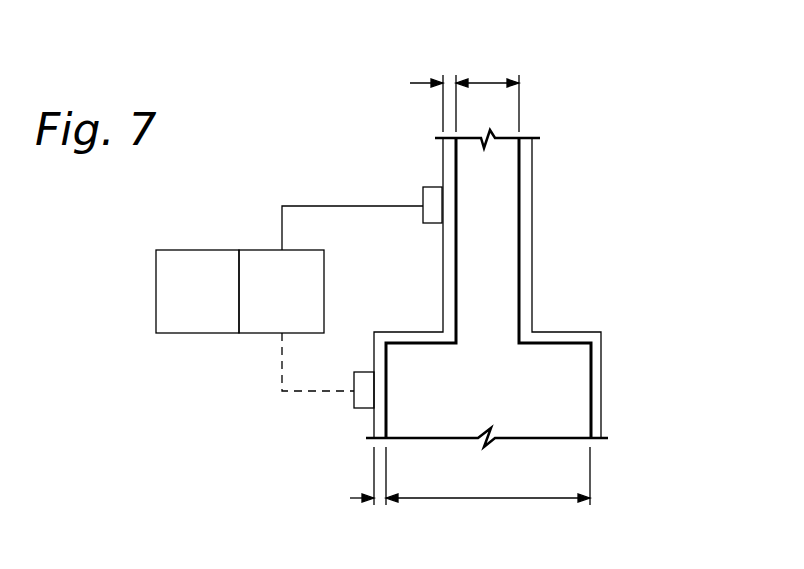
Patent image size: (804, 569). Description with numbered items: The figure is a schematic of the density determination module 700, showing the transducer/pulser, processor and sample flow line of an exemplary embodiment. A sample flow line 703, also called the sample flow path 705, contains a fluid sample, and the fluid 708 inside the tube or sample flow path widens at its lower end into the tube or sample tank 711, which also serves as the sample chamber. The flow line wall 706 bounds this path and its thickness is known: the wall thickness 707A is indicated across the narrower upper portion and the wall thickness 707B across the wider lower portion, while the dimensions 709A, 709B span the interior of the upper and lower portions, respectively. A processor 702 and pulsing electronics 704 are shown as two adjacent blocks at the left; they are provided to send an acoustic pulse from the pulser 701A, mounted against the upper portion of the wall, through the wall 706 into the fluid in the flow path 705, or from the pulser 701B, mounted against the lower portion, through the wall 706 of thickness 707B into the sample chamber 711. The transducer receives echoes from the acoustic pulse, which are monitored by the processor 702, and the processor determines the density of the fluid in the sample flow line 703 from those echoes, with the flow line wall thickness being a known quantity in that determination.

The density determination module 700 is at (677, 103).
The pulser 701A is at (433, 187).
The pulser 701B is at (354, 408).
The processor 702 is at (156, 283).
The sample flow line 703 is at (532, 200).
The pulsing electronics 704 is at (324, 283).
The sample flow path 705 is at (498, 167).
The flow line wall 706 is at (451, 243).
The wall thickness 707A is at (448, 83).
The wall thickness 707B is at (385, 502).
The fluid 708 is at (498, 239).
The first inner diameter 709A is at (493, 83).
The second inner diameter 709B is at (487, 502).
The sample tank 711 is at (569, 393).